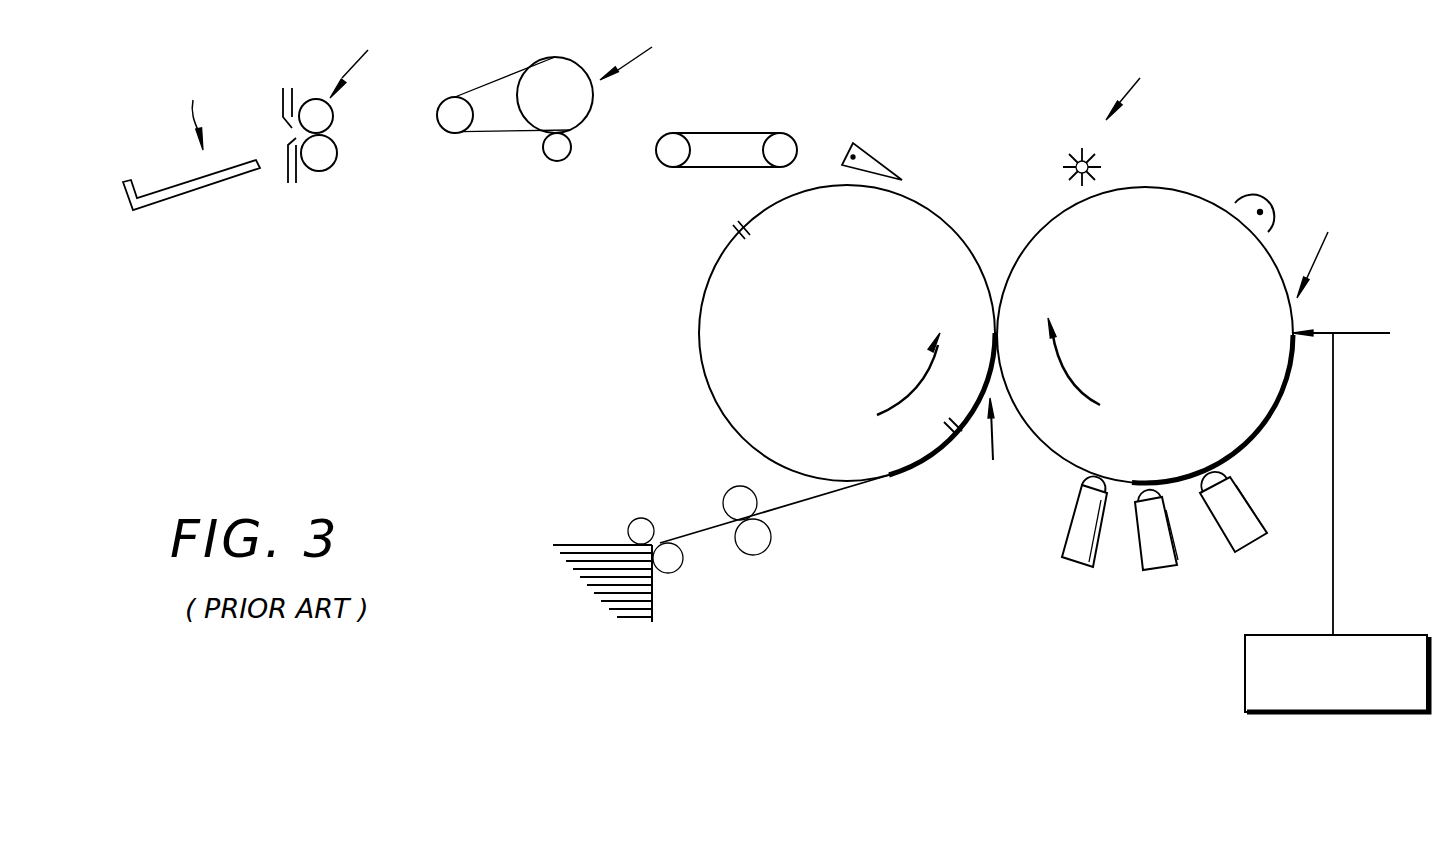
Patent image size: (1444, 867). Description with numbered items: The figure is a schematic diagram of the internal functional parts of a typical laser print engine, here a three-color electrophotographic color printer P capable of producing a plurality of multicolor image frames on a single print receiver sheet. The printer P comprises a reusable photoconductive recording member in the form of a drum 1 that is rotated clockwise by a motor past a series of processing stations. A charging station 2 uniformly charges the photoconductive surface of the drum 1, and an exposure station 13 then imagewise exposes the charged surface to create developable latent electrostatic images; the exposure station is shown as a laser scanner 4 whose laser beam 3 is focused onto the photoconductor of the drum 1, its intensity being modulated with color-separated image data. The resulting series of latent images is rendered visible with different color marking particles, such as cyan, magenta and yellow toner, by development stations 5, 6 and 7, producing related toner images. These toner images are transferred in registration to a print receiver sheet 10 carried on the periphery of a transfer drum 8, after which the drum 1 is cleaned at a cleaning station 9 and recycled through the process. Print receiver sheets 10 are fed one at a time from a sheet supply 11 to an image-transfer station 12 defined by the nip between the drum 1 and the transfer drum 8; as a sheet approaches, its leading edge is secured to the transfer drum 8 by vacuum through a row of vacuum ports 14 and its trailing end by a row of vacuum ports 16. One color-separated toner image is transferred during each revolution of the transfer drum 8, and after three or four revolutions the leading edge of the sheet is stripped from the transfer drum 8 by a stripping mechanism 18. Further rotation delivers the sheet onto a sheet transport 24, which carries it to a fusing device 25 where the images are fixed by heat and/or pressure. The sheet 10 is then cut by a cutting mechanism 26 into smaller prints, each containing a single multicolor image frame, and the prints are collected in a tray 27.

The drum 1 is at (1190, 192).
The charging station 2 is at (1268, 190).
The laser beam 3 is at (1327, 330).
The laser scanner 4 is at (1245, 678).
The development station 5 is at (1245, 537).
The development station 6 is at (1148, 560).
The development station 7 is at (1075, 555).
The transfer drum 8 is at (952, 226).
The cleaning station 9 is at (1076, 150).
The print receiver sheet 10 is at (845, 497).
The sheet supply 11 is at (585, 548).
The image-transfer station 12 is at (1002, 442).
The exposure station 13 is at (1325, 253).
The vacuum ports 14 is at (958, 438).
The vacuum ports 16 is at (733, 235).
The stripping mechanism 18 is at (880, 165).
The sheet transport 24 is at (738, 133).
The fusing device 25 is at (559, 97).
The cutting mechanism 26 is at (336, 105).
The tray 27 is at (191, 142).
The electrophotographic color printer P is at (1132, 87).